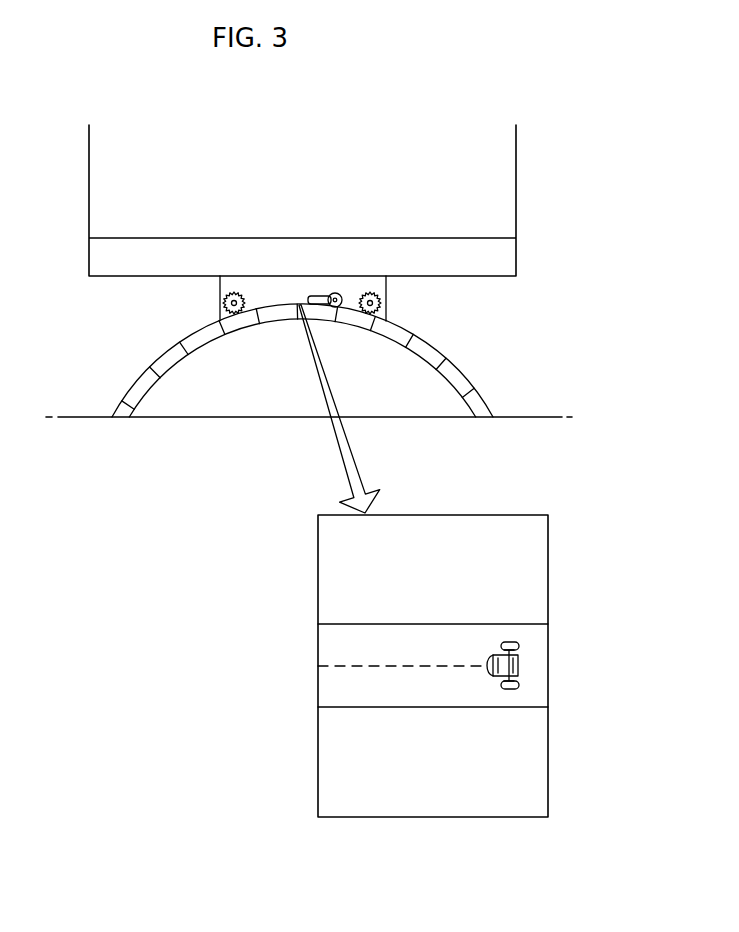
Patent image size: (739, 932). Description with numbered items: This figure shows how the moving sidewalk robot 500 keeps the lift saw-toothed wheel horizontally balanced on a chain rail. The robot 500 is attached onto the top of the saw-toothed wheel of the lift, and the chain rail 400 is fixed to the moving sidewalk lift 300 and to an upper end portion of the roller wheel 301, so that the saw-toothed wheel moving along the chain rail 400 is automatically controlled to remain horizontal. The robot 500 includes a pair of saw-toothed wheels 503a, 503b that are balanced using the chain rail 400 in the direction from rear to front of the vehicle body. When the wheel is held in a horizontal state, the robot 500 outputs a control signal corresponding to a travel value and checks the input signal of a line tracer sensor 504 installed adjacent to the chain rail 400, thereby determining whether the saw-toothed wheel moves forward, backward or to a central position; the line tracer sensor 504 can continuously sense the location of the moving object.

The moving sidewalk lift 300 is at (517, 183).
The roller wheel 301 is at (74, 416).
The chain rail 400 is at (138, 383).
The moving sidewalk robot 500 is at (325, 292).
The saw-toothed wheel 503a is at (222, 301).
The saw-toothed wheel 503b is at (384, 301).
The line tracer sensor 504 is at (345, 665).